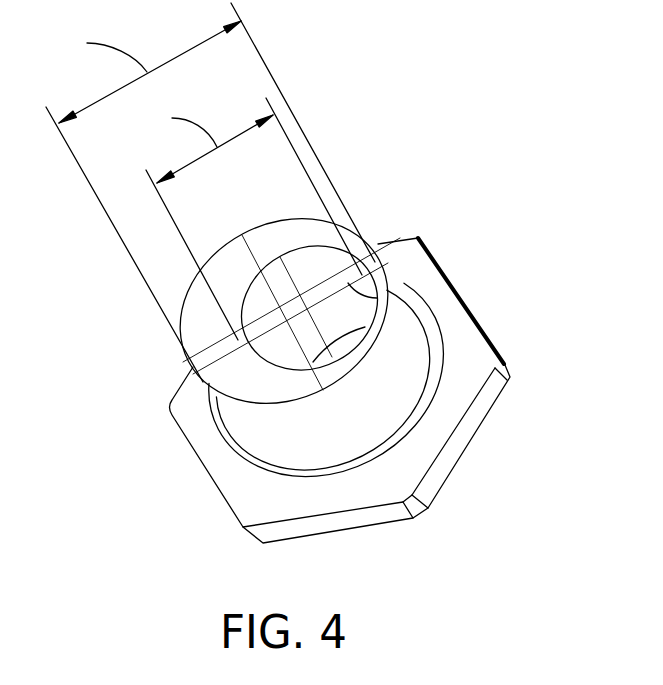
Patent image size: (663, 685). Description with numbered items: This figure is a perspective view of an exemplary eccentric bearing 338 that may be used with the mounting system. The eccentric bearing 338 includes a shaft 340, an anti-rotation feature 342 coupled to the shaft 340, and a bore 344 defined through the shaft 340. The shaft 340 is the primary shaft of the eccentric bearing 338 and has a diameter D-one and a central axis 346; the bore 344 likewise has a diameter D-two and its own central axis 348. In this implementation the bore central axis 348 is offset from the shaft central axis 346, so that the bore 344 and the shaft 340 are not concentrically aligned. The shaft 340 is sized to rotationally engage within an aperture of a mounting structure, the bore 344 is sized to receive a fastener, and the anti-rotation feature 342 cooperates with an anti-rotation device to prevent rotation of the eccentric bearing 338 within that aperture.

The eccentric bearing 338 is at (417, 185).
The shaft 340 is at (383, 402).
The anti-rotation feature 342 is at (473, 353).
The bore 344 is at (303, 247).
The central axis 346 is at (197, 390).
The central axis 348 is at (360, 295).